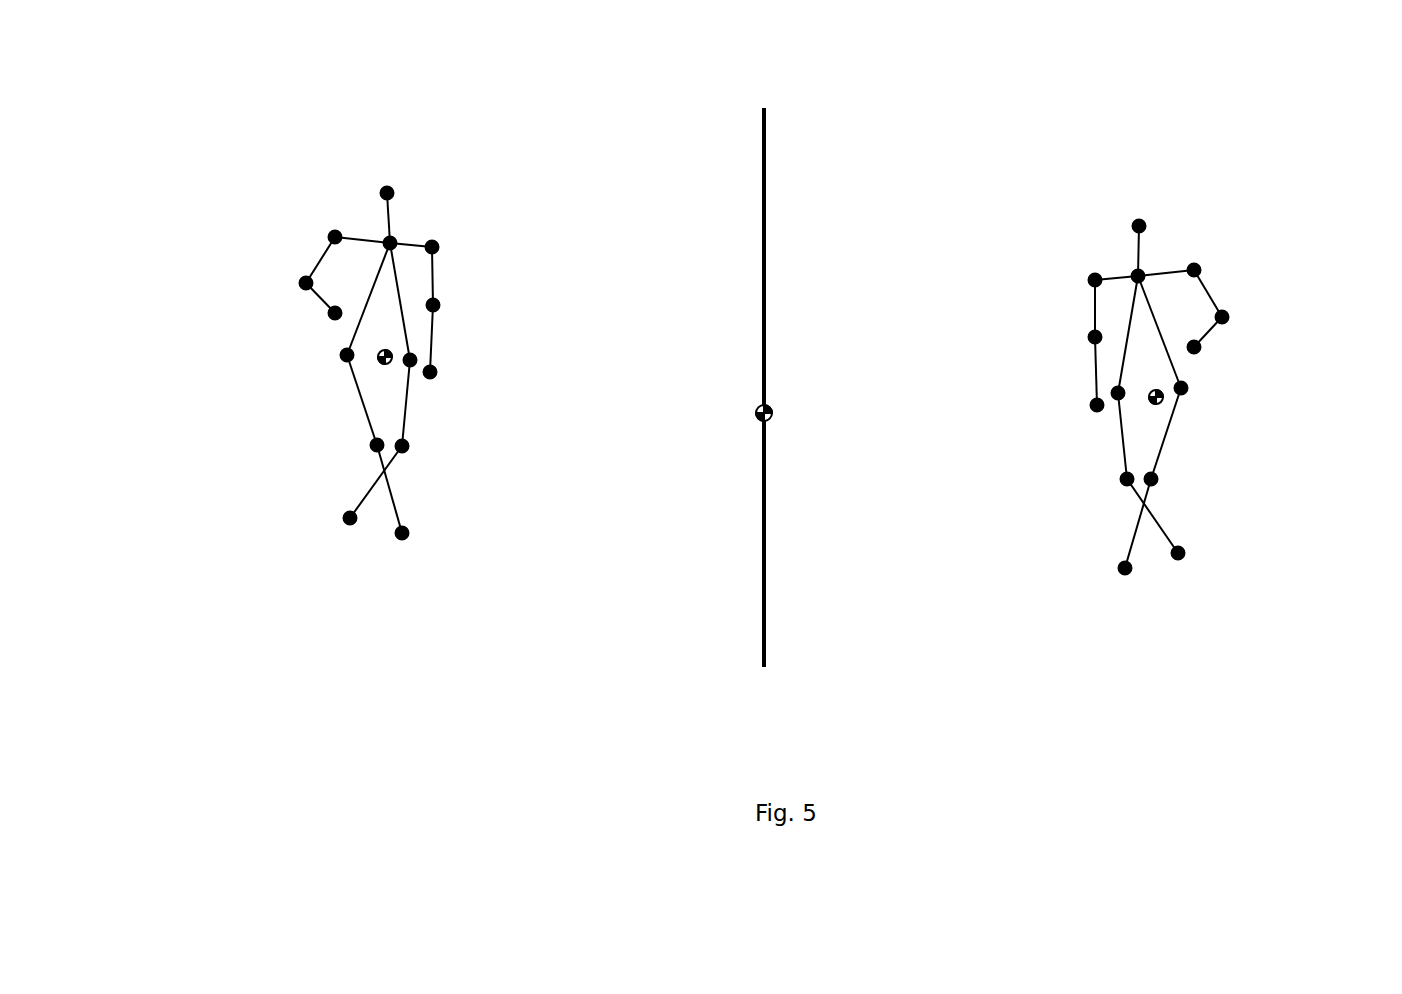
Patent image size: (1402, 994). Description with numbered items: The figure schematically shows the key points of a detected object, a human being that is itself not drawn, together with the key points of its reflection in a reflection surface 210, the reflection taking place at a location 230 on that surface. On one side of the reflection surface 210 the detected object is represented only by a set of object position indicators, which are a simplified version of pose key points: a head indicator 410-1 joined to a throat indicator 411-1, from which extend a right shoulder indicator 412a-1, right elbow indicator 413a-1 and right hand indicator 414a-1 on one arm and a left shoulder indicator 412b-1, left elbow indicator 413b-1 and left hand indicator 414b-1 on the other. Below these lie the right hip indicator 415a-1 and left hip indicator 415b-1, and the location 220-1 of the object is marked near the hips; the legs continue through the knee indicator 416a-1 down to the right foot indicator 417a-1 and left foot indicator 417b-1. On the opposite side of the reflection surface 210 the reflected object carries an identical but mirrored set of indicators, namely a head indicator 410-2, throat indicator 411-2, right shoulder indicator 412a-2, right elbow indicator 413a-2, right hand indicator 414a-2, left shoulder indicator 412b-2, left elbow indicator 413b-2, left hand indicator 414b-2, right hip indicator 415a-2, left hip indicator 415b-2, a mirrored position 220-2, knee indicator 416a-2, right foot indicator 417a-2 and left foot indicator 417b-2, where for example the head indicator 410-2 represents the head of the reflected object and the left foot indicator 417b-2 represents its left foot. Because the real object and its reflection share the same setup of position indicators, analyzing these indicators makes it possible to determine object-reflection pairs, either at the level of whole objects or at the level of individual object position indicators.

The reflection surface 210 is at (766, 132).
The location 230 is at (758, 418).
The head object position indicator 410-1 is at (387, 193).
The throat object position indicator 411-1 is at (390, 243).
The right shoulder object position indicator 412a-1 is at (335, 237).
The right elbow object position indicator 413a-1 is at (306, 283).
The right hand object position indicator 414a-1 is at (335, 313).
The left shoulder object position indicator 412b-1 is at (432, 247).
The left elbow object position indicator 413b-1 is at (433, 305).
The left hand object position indicator 414b-1 is at (430, 372).
The right hip object position indicator 415a-1 is at (347, 355).
The left hip object position indicator 415b-1 is at (410, 360).
The location of the object 220-1 is at (378, 358).
The knee object position indicator 416a-1 is at (377, 445).
The right foot object position indicator 417a-1 is at (402, 533).
The left foot object position indicator 417b-1 is at (350, 518).
The head object position indicator 410-2 is at (1139, 226).
The throat object position indicator 411-2 is at (1138, 276).
The right shoulder object position indicator 412a-2 is at (1194, 270).
The right elbow object position indicator 413a-2 is at (1222, 317).
The right hand object position indicator 414a-2 is at (1194, 347).
The left shoulder object position indicator 412b-2 is at (1095, 280).
The left elbow object position indicator 413b-2 is at (1095, 337).
The left hand object position indicator 414b-2 is at (1097, 405).
The right hip object position indicator 415a-2 is at (1181, 388).
The left hip object position indicator 415b-2 is at (1118, 393).
The position of the reflected object 220-2 is at (1163, 400).
The knee object position indicator 416a-2 is at (1127, 479).
The right foot object position indicator 417a-2 is at (1125, 568).
The left foot object position indicator 417b-2 is at (1178, 553).